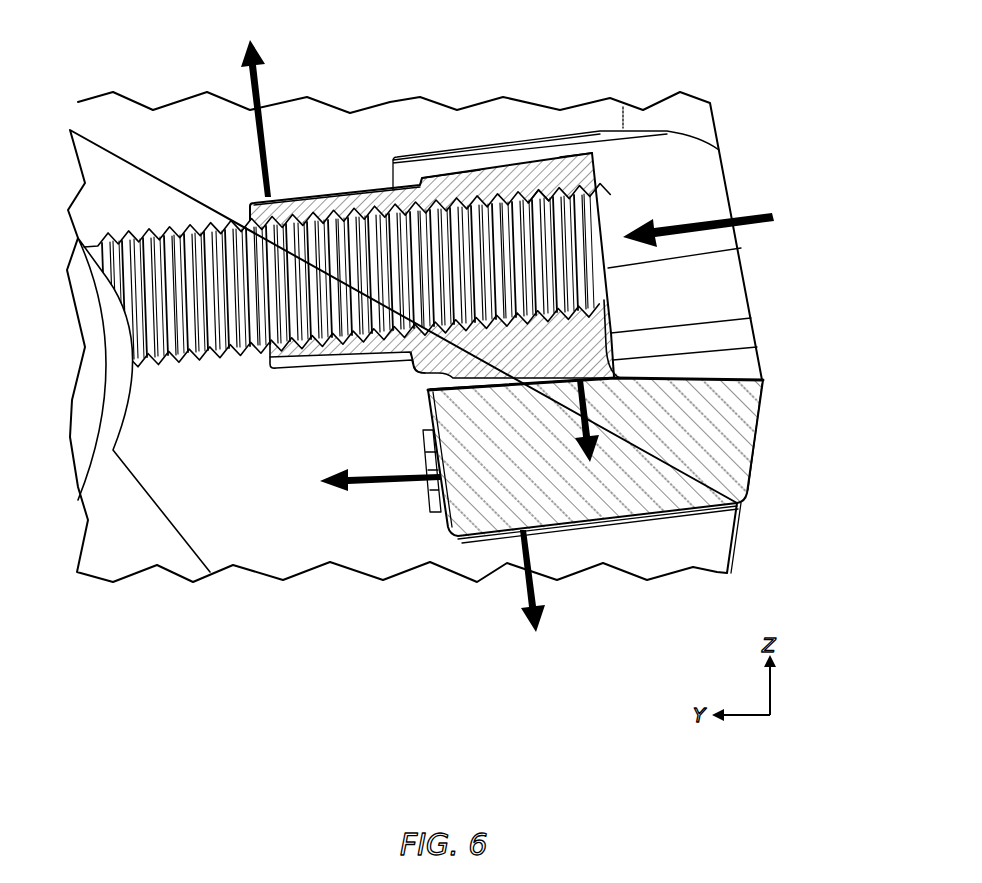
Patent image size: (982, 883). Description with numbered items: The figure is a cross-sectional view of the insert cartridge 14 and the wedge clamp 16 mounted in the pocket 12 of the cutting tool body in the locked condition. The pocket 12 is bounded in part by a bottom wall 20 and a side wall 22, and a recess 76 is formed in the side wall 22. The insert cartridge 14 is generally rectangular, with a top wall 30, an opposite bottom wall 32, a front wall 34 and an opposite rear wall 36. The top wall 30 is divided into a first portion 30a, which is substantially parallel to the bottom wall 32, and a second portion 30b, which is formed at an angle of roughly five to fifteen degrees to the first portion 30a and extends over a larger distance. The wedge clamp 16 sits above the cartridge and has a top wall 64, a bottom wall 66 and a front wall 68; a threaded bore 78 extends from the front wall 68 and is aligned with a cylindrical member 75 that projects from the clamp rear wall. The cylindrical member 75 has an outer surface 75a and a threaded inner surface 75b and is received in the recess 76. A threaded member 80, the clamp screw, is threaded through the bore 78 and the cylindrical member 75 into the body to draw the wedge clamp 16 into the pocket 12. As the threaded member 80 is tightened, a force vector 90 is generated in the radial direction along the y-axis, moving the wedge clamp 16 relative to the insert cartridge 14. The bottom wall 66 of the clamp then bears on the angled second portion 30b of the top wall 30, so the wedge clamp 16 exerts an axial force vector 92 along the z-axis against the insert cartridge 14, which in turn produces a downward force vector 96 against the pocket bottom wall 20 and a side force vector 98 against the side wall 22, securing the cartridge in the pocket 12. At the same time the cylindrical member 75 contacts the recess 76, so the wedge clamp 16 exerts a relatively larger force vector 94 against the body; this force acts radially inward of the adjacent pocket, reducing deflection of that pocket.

The pocket 12 is at (724, 236).
The insert cartridge 14 is at (764, 416).
The wedge clamp 16 is at (617, 207).
The bottom wall 20 is at (573, 510).
The side wall 22 is at (418, 388).
The top wall 30 is at (695, 375).
The first portion 30a is at (417, 383).
The second portion 30b is at (641, 376).
The bottom wall 32 is at (651, 519).
The front wall 34 is at (758, 461).
The rear wall 36 is at (438, 500).
The top wall 64 is at (450, 168).
The bottom wall 66 is at (545, 383).
The front wall 68 is at (599, 170).
The cylindrical member 75 is at (290, 192).
The outer surface 75a is at (313, 190).
The threaded inner surface 75b is at (375, 188).
The recess 76 is at (300, 355).
The threaded bore 78 is at (537, 192).
The threaded member 80 is at (178, 275).
The force vector 90 is at (751, 214).
The force vector 92 is at (588, 405).
The force vector 94 is at (258, 138).
The downward force vector 96 is at (522, 585).
The side force vector 98 is at (432, 472).